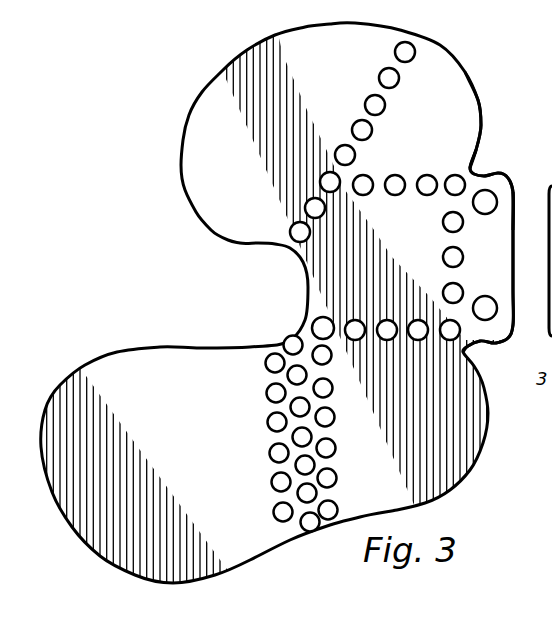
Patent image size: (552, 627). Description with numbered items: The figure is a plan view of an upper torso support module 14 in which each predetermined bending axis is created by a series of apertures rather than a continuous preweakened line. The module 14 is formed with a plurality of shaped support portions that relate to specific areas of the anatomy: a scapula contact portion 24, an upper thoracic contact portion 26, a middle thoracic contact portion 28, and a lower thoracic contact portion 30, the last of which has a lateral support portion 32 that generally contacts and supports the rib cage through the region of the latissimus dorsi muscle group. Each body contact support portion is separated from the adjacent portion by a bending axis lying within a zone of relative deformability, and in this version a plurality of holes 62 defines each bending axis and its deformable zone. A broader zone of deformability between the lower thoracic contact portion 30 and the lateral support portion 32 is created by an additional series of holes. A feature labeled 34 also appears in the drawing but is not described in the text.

The support module 14 is at (230, 288).
The scapula contact portion 24 is at (206, 134).
The upper thoracic contact portion 26 is at (455, 110).
The middle thoracic contact portion 28 is at (410, 248).
The lower thoracic contact portion 30 is at (412, 432).
The lateral support portion 32 is at (158, 417).
The notch 34 is at (514, 167).
The holes 62 is at (400, 80).